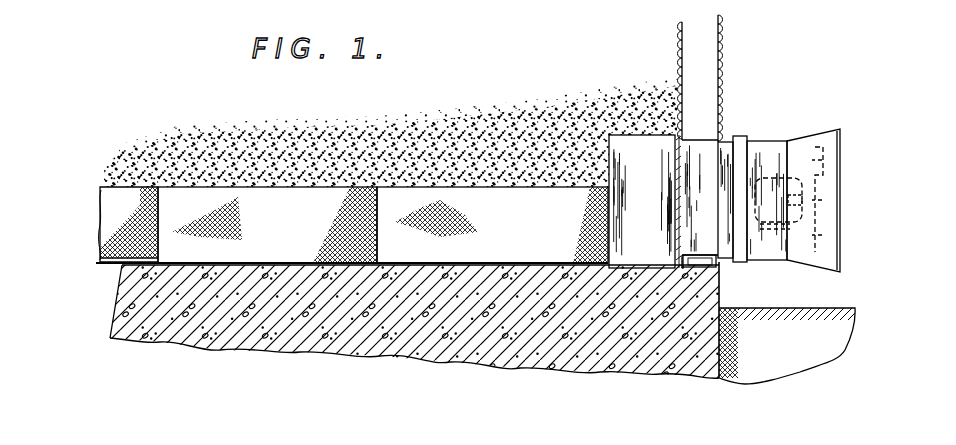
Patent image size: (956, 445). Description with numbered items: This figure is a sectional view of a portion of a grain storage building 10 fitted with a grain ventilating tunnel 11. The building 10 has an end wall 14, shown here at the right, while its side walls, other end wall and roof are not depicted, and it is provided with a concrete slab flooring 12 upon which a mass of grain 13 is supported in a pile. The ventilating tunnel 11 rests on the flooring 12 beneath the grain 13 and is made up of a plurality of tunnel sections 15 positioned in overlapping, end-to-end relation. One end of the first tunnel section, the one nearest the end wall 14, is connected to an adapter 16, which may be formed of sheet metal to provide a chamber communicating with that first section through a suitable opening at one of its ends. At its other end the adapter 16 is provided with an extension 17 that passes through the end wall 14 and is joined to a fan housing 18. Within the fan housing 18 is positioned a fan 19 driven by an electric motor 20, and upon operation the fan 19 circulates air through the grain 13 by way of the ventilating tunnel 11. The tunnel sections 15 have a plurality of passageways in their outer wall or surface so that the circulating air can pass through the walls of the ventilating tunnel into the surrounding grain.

The grain storage building 10 is at (732, 199).
The grain ventilating tunnel 11 is at (287, 183).
The concrete slab flooring 12 is at (575, 320).
The mass of grain 13 is at (512, 122).
The end wall 14 is at (681, 38).
The tunnel sections 15 is at (115, 200).
The adapter 16 is at (654, 170).
The extension 17 is at (698, 152).
The fan housing 18 is at (775, 148).
The fan 19 is at (817, 146).
The electric motor 20 is at (782, 262).